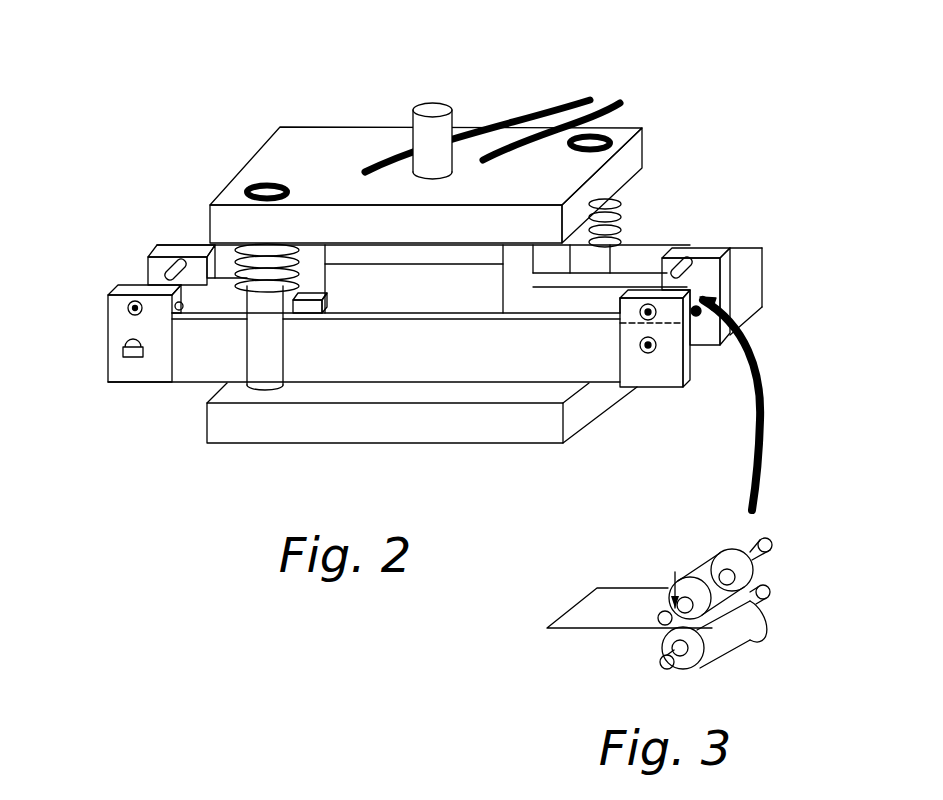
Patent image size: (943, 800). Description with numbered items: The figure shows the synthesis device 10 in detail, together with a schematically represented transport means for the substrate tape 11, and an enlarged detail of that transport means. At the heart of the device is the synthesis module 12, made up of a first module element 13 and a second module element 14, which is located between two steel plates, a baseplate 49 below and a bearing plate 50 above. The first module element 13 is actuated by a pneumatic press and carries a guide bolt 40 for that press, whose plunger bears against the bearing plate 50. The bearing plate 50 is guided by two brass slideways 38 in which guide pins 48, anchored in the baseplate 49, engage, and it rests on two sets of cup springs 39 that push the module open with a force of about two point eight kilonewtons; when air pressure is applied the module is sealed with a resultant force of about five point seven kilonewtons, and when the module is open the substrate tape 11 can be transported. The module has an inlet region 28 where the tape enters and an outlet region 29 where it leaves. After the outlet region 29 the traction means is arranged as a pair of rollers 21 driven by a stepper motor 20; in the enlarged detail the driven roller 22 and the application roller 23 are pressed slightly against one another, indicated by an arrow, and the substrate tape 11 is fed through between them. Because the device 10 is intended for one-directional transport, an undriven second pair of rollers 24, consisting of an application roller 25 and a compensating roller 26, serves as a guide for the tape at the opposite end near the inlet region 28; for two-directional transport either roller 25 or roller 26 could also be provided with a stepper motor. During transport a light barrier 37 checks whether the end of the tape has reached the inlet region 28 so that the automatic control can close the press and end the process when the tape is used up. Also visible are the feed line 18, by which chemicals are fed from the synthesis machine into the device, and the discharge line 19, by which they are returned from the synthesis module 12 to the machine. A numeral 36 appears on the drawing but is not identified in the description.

In FIG. 2, the synthesis device 10 is at (200, 107).
In FIG. 3, the substrate tape 11 is at (595, 614).
In FIG. 2, the synthesis module 12 is at (310, 168).
In FIG. 2, the first module element 13 is at (522, 270).
In FIG. 2, the second module element 14 is at (530, 290).
In FIG. 2, the feed line 18 is at (625, 112).
In FIG. 2, the discharge line 19 is at (578, 100).
In FIG. 2, the stepper motor 20 is at (765, 283).
In FIG. 2, the pair of rollers 21 is at (766, 283).
In FIG. 3, the pair of rollers 21 is at (767, 630).
In FIG. 2, the driven roller 22 is at (698, 316).
In FIG. 3, the driven roller 22 is at (725, 640).
In FIG. 2, the application roller 23 is at (683, 275).
In FIG. 3, the application roller 23 is at (728, 581).
In FIG. 2, the second pair of rollers 24 is at (117, 267).
In FIG. 2, the application roller 25 is at (175, 270).
In FIG. 2, the compensating roller 26 is at (175, 306).
In FIG. 2, the inlet region 28 is at (305, 276).
In FIG. 2, the outlet region 29 is at (528, 308).
In FIG. 2, the bolt 36 is at (133, 352).
In FIG. 2, the light barrier 37 is at (307, 310).
In FIG. 2, the brass slideways 38 is at (247, 190).
In FIG. 2, the cup springs 39 is at (623, 222).
In FIG. 2, the guide bolt 40 is at (430, 138).
In FIG. 2, the guide pins 48 is at (262, 358).
In FIG. 2, the baseplate 49 is at (363, 423).
In FIG. 2, the bearing plate 50 is at (333, 142).